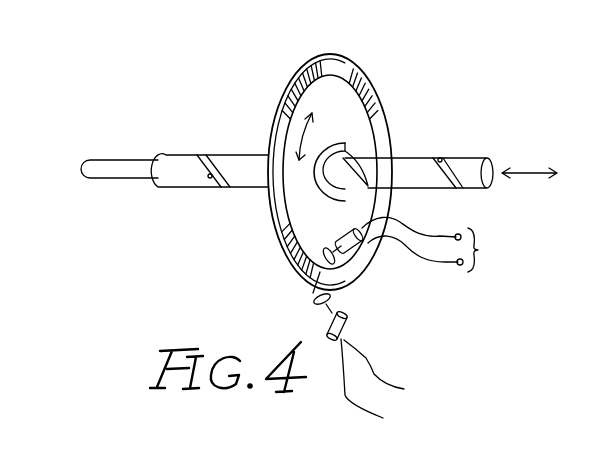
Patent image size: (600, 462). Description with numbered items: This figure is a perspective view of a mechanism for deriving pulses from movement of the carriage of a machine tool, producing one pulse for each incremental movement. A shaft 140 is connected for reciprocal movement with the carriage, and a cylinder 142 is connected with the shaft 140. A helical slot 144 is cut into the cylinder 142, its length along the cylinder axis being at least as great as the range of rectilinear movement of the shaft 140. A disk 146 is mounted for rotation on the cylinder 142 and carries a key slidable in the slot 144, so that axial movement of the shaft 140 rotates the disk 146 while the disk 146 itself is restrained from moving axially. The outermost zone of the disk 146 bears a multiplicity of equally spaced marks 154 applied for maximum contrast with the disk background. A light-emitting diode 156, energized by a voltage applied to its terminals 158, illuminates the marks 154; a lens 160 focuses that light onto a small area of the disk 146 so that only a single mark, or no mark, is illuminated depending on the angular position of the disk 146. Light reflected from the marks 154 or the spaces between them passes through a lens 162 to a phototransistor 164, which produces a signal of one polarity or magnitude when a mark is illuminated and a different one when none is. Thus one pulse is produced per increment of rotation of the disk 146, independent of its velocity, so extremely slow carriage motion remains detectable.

The shaft 140 is at (118, 165).
The cylinder 142 is at (213, 156).
The helical slot 144 is at (208, 177).
The disk 146 is at (334, 56).
The marks 154 is at (282, 254).
The light-emitting diode 156 is at (350, 233).
The terminals 158 is at (441, 244).
The lens 160 is at (332, 261).
The lens 162 is at (312, 302).
The phototransistor 164 is at (347, 325).